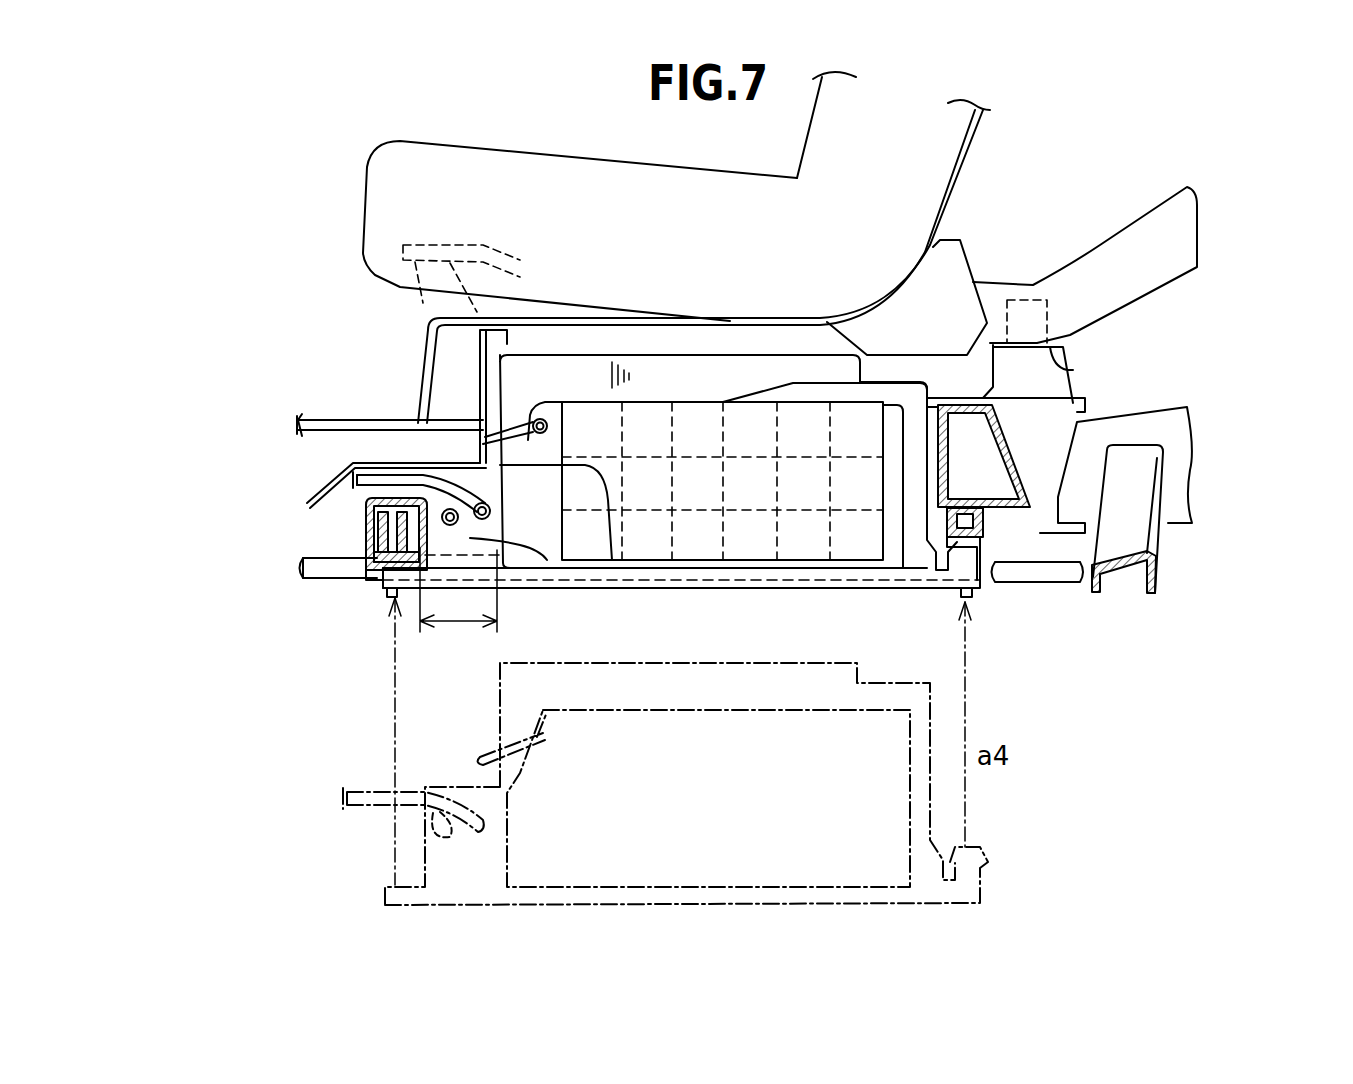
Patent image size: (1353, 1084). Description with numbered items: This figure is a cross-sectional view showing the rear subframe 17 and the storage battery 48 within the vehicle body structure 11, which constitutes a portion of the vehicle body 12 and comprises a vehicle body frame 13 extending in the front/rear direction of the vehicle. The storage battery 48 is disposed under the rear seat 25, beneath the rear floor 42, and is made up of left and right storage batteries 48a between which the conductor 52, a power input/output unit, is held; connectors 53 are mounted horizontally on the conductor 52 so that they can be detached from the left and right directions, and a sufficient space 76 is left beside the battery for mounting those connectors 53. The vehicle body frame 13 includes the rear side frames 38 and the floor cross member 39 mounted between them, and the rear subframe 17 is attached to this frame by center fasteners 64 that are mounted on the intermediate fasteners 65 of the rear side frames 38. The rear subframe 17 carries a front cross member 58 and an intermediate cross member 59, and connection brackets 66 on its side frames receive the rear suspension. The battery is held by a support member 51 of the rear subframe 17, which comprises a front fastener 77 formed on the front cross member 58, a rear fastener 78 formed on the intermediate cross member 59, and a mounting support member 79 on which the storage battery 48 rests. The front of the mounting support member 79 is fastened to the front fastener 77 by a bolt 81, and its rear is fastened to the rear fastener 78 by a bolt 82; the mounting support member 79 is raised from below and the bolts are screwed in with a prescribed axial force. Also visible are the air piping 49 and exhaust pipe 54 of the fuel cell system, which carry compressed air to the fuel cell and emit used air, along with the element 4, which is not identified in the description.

The rear seat 25 is at (426, 121).
The rear floor 42 is at (523, 313).
The storage battery 48 is at (591, 378).
The conductor 52 is at (672, 392).
The storage batteries 48a is at (706, 400).
The rear side frames 38 is at (1125, 228).
The vehicle body 12 is at (200, 183).
The vehicle body structure 11 is at (203, 271).
The vehicle body frame 13 is at (206, 344).
The frame pipe 4 is at (254, 452).
The floor cross member 39 is at (447, 420).
The rear subframe 17 is at (328, 548).
The front cross member 58 is at (370, 520).
The air piping 49 is at (258, 578).
The exhaust pipe 54 is at (320, 582).
The front fastener 77 is at (385, 572).
The bolt 81 is at (388, 598).
The space 76 is at (460, 630).
The connectors 53 is at (490, 512).
The support member 51 is at (668, 592).
The mounting support member 79 is at (725, 592).
The rear fastener 78 is at (987, 523).
The bolt 82 is at (978, 597).
The center fasteners 64 is at (1083, 407).
The intermediate fasteners 65 is at (1087, 370).
The intermediate cross member 59 is at (1005, 443).
The connection brackets 66 is at (1163, 555).